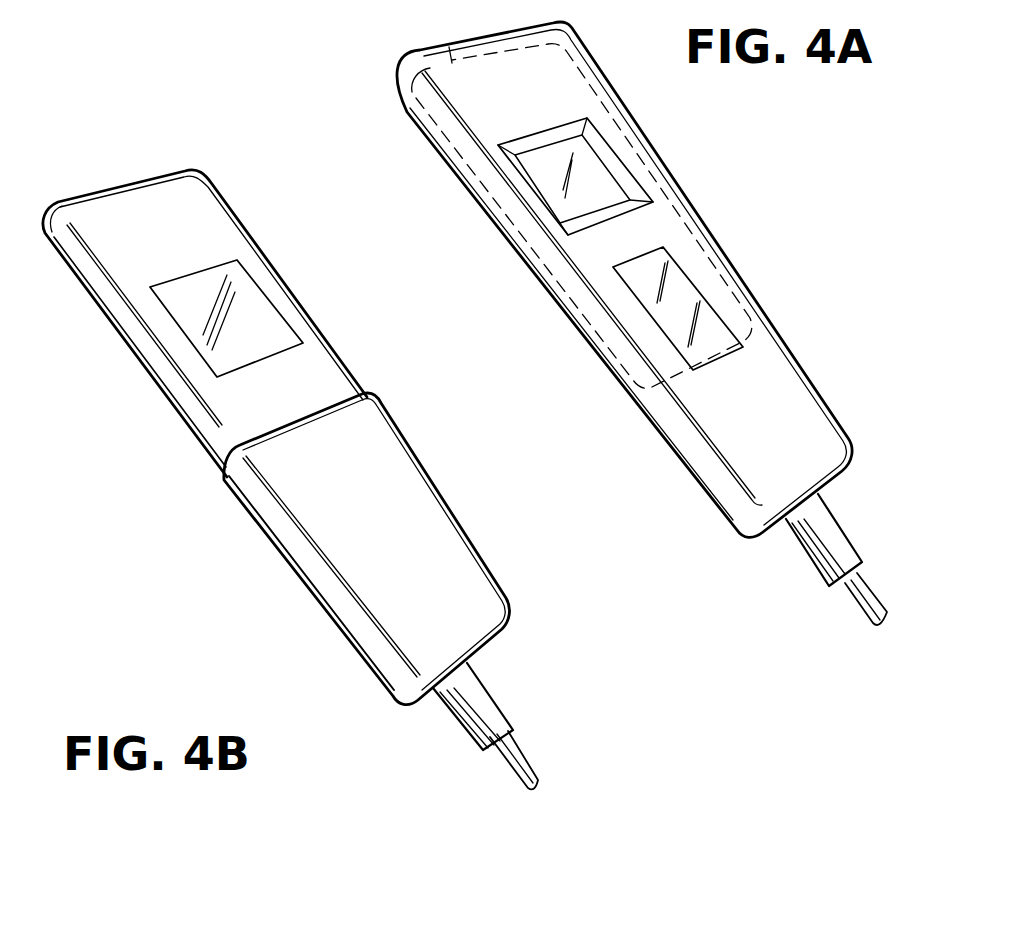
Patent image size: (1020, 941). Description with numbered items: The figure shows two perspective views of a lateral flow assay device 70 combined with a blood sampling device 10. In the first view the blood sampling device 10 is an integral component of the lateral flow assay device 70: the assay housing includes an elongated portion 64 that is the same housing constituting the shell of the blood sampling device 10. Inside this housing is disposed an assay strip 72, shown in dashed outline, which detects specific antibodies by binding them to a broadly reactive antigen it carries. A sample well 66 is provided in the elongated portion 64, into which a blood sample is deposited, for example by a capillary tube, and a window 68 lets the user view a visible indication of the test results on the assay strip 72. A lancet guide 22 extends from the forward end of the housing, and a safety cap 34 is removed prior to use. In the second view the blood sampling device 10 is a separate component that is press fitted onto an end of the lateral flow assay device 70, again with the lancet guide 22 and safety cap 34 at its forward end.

In FIG. 4A, the blood sampling device 10 is at (680, 520).
In FIG. 4B, the blood sampling device 10 is at (265, 572).
In FIG. 4A, the lancet guide 22 is at (823, 562).
In FIG. 4B, the lancet guide 22 is at (463, 723).
In FIG. 4A, the safety cap 34 is at (863, 610).
In FIG. 4B, the safety cap 34 is at (517, 767).
In FIG. 4A, the elongated portion 64 is at (540, 68).
In FIG. 4A, the sample well 66 is at (590, 168).
In FIG. 4A, the window 68 is at (683, 282).
In FIG. 4A, the lateral flow assay device 70 is at (462, 208).
In FIG. 4B, the lateral flow assay device 70 is at (158, 159).
In FIG. 4A, the assay strip 72 is at (414, 47).